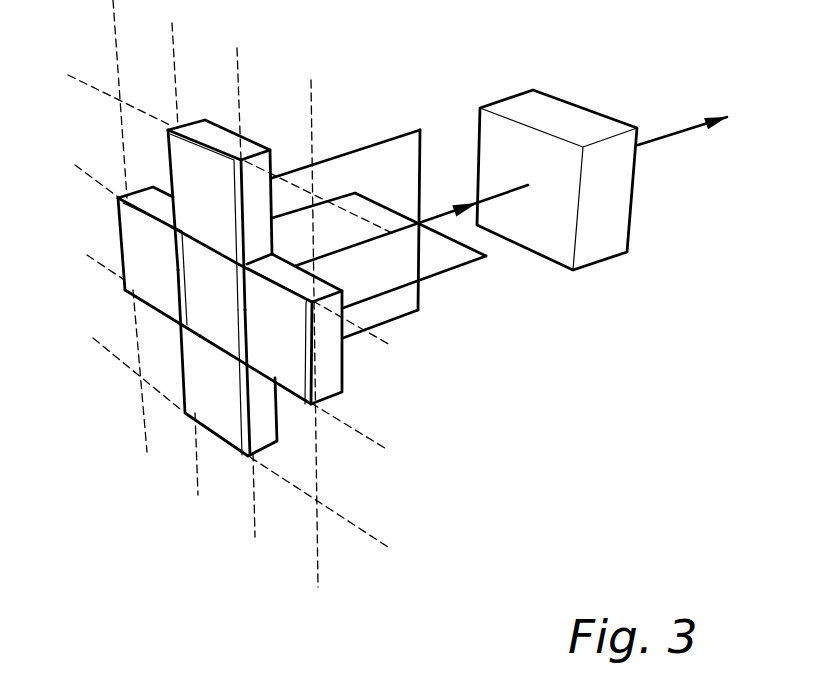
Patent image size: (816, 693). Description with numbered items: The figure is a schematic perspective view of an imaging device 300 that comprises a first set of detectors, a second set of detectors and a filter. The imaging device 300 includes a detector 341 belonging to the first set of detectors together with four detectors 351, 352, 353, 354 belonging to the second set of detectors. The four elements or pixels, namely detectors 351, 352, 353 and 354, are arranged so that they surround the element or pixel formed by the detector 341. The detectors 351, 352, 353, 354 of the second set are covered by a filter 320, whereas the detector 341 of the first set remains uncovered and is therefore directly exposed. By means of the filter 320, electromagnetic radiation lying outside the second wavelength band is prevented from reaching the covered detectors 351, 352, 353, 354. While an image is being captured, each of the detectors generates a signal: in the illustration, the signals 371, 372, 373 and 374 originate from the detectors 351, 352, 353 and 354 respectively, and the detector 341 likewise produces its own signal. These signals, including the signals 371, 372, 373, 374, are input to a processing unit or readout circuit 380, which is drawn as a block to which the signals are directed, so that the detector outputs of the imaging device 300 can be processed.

The imaging device 300 is at (147, 550).
The filter 320 is at (315, 364).
The detector 341 is at (213, 333).
The detector 351 is at (148, 198).
The detector 352 is at (218, 133).
The detector 353 is at (322, 293).
The detector 354 is at (257, 448).
The signal 371 is at (357, 242).
The signal 372 is at (292, 165).
The signal 373 is at (460, 268).
The signal 374 is at (385, 207).
The processing unit or readout circuit 380 is at (570, 118).